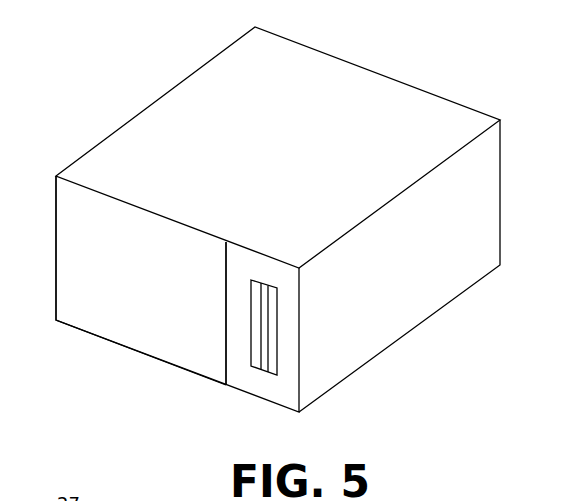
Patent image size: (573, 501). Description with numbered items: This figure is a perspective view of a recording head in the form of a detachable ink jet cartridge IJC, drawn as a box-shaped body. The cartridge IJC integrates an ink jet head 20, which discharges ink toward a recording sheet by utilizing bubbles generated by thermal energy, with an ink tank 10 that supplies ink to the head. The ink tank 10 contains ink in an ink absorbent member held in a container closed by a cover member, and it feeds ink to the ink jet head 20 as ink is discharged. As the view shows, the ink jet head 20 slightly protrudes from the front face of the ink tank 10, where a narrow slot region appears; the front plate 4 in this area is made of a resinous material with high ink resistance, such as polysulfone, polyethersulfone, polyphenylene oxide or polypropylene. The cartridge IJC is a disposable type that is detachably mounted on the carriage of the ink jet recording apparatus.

The ink jet cartridge IJC is at (407, 82).
The ink tank 10 is at (155, 112).
The ink jet head 20 is at (272, 374).
The front plate 4 is at (272, 347).